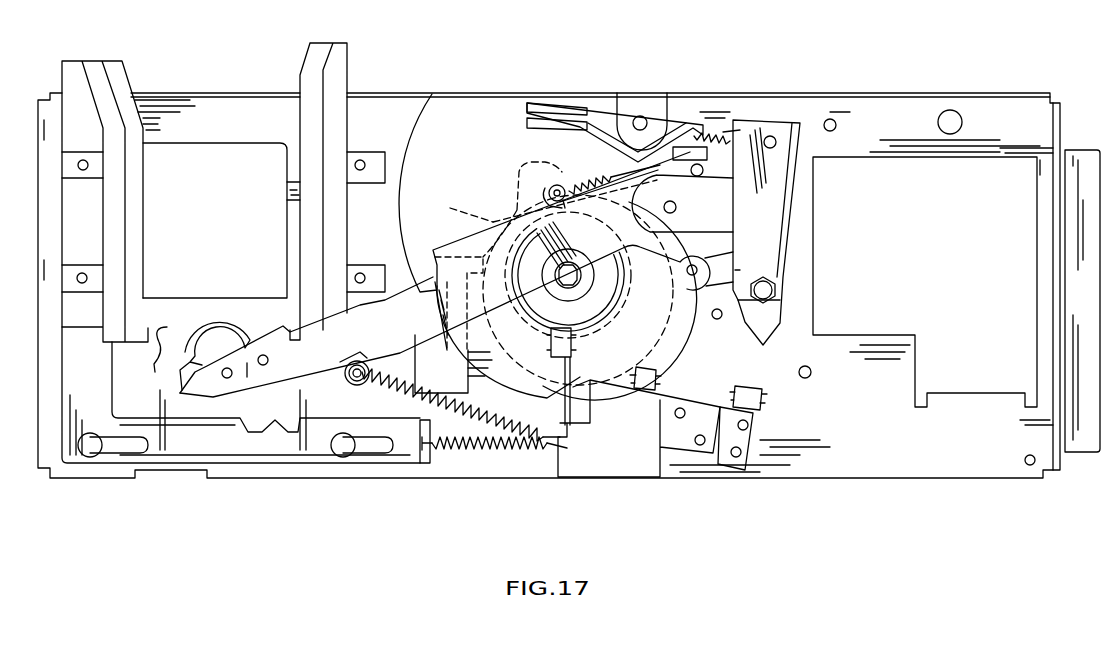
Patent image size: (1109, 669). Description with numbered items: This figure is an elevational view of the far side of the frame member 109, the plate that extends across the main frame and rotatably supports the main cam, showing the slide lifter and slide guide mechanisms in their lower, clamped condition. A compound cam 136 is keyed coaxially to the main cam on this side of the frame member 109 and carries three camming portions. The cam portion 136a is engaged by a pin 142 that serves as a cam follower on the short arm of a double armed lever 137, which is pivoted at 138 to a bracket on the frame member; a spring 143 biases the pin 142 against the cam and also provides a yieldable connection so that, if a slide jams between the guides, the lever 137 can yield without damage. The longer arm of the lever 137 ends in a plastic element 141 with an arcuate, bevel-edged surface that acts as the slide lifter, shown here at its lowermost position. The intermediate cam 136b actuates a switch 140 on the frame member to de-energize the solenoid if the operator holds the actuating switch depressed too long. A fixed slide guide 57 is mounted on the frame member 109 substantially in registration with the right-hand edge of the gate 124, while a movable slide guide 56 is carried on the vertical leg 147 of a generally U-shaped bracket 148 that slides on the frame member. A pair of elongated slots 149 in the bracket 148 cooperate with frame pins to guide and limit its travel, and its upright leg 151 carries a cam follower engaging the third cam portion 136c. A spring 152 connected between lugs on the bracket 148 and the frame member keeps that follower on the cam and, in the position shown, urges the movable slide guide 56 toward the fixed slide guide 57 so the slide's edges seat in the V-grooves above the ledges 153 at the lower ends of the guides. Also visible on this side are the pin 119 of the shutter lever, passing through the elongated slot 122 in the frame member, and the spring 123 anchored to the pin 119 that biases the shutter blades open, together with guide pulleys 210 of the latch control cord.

The movable slide guide 56 is at (116, 61).
The fixed slide guide 57 is at (320, 46).
The frame member 109 is at (972, 457).
The pin 119 is at (354, 386).
The elongated slot 122 is at (338, 366).
The spring 123 is at (486, 421).
The gate 124 is at (202, 143).
The compound cam 136 is at (496, 158).
The cam portion 136a is at (673, 337).
The intermediate cam 136b is at (482, 180).
The third cam portion 136c is at (462, 210).
The double armed lever 137 is at (392, 332).
The pivot 138 is at (690, 214).
The switch 140 is at (592, 111).
The plastic element 141 is at (231, 325).
The pin 142 is at (712, 264).
The spring 143 is at (596, 173).
The vertical leg 147 is at (72, 373).
The U-shaped bracket 148 is at (234, 457).
The elongated slots 149 is at (118, 453).
The upright leg 151 is at (466, 377).
The spring 152 is at (503, 452).
The ledges 153 is at (158, 362).
The guide pulleys 210 is at (576, 337).